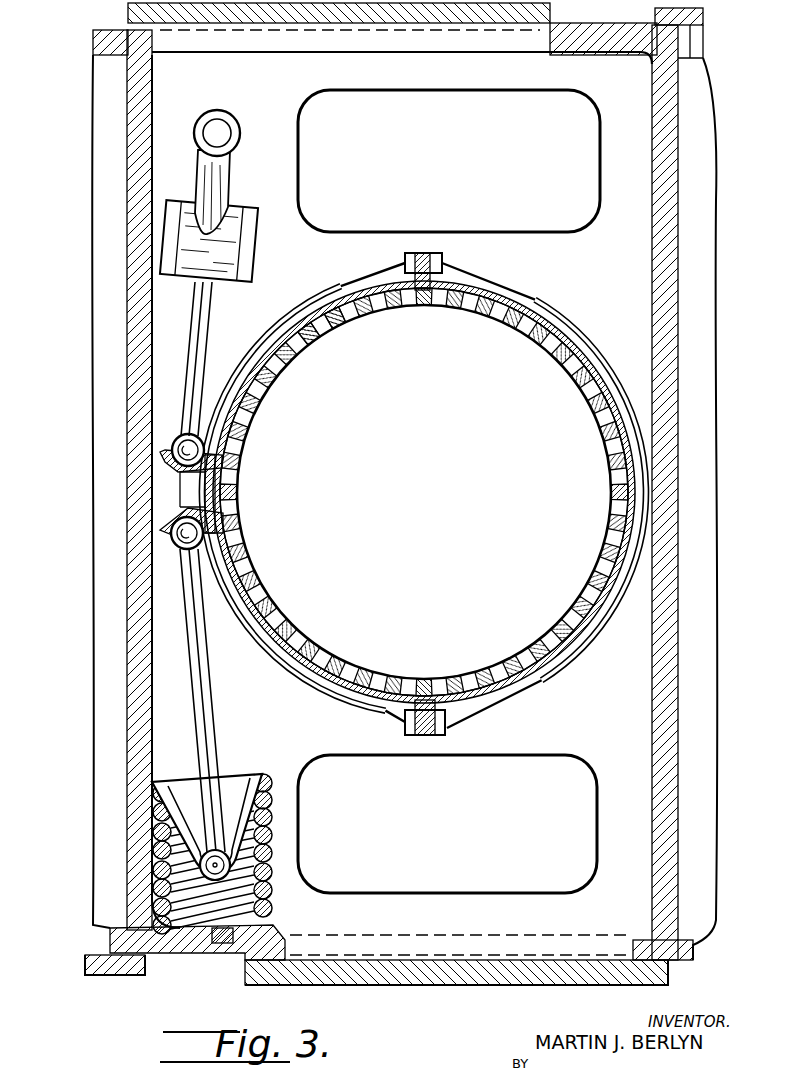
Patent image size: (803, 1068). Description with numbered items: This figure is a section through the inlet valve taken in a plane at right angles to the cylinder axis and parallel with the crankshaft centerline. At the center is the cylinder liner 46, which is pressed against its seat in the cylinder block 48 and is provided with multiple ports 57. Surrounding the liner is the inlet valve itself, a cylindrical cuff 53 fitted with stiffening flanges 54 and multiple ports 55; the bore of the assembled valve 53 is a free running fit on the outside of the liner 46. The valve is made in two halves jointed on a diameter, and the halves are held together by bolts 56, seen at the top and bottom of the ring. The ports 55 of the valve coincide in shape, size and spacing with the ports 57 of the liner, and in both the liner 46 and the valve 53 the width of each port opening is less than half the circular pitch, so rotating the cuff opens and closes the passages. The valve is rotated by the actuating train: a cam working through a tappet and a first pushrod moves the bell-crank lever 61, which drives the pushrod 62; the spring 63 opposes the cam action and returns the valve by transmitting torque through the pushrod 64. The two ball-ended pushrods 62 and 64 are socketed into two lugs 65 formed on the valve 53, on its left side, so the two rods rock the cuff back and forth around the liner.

The cylinder liner 46 is at (252, 418).
The cylinder block 48 is at (668, 196).
The cylindrical cuff 53 is at (578, 340).
The stiffening flanges 54 is at (555, 300).
The ports 55 is at (498, 298).
The bolts 56 is at (445, 265).
The ports 57 is at (297, 365).
The bell-crank lever 61 is at (232, 190).
The pushrod 62 is at (213, 325).
The spring 63 is at (262, 798).
The pushrod 64 is at (213, 742).
The lugs 65 is at (175, 522).